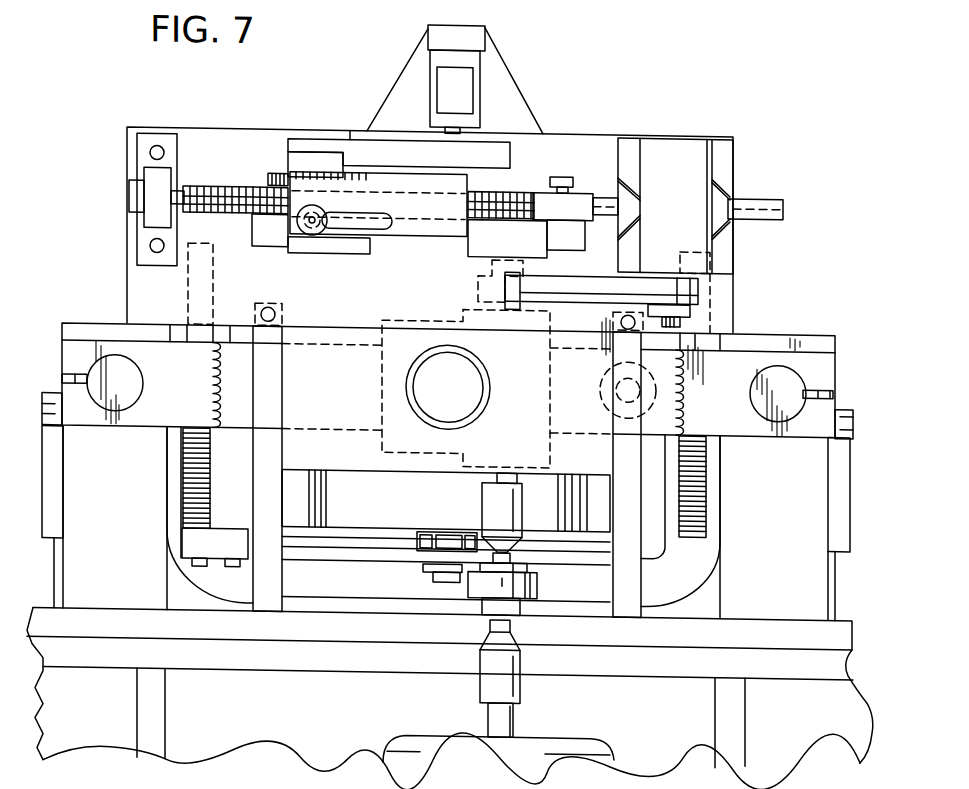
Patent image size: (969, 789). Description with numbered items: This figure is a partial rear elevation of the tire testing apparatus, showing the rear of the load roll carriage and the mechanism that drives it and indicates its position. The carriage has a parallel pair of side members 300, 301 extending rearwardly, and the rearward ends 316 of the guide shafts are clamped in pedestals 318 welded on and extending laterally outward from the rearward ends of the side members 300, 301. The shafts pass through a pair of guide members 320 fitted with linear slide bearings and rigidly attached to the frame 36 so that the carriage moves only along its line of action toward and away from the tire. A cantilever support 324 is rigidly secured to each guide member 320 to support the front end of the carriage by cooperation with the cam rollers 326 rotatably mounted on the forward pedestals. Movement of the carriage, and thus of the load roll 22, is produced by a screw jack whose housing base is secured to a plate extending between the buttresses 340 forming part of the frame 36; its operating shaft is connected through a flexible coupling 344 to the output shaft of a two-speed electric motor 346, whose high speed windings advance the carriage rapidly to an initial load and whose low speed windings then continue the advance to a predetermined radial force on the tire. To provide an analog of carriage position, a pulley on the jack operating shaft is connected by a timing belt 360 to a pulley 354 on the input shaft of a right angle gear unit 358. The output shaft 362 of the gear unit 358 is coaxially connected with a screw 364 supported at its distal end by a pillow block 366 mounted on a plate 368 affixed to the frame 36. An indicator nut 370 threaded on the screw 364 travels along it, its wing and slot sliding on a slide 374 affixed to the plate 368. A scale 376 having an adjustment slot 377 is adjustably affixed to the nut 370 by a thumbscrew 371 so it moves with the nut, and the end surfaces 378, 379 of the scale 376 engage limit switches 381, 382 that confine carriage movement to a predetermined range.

The load roll 22 is at (372, 512).
The frame 36 is at (275, 660).
The side member 300 is at (190, 301).
The side member 301 is at (700, 497).
The rearward ends of guide shafts 316 is at (96, 371).
The pedestals 318 is at (68, 345).
The guide members 320 is at (125, 493).
The cantilever support 324 is at (52, 460).
The cam rollers 326 is at (43, 404).
The buttresses 340 is at (472, 70).
The flexible coupling 344 is at (528, 580).
The two-speed electric motor 346 is at (600, 744).
The pulley 354 is at (692, 303).
The right angle gear unit 358 is at (702, 158).
The timing belt 360 is at (645, 285).
The output shaft 362 is at (600, 192).
The screw 364 is at (204, 184).
The pillow block 366 is at (131, 183).
The plate 368 is at (141, 131).
The indicator nut 370 is at (351, 251).
The thumbscrew 371 is at (320, 209).
The slide 374 is at (350, 138).
The scale 376 is at (427, 223).
The adjustment slot 377 is at (375, 217).
The end surface 378 is at (468, 180).
The end surface 379 is at (287, 216).
The limit switch 381 is at (570, 171).
The limit switch 382 is at (276, 170).